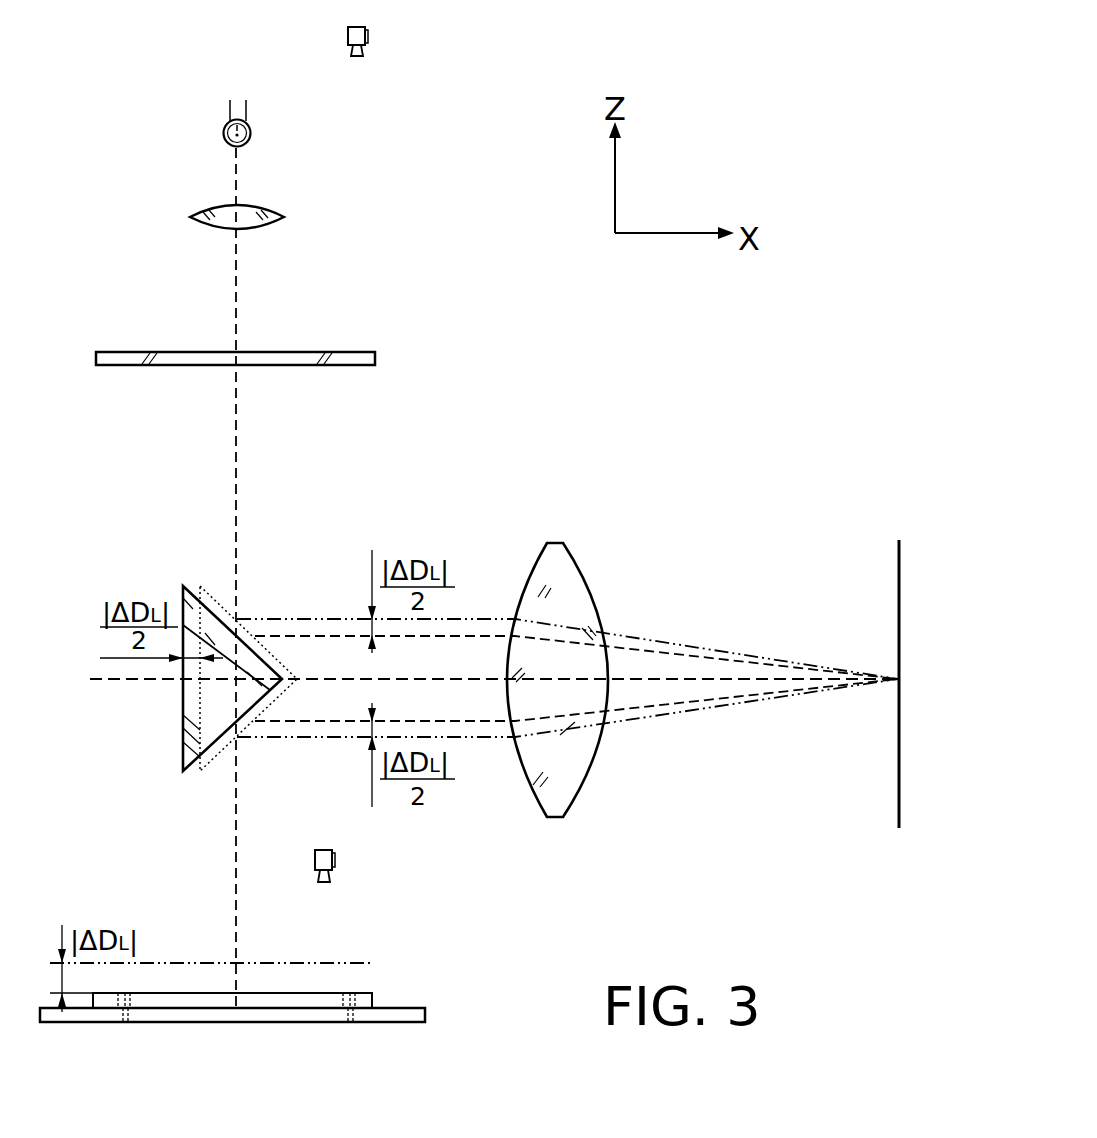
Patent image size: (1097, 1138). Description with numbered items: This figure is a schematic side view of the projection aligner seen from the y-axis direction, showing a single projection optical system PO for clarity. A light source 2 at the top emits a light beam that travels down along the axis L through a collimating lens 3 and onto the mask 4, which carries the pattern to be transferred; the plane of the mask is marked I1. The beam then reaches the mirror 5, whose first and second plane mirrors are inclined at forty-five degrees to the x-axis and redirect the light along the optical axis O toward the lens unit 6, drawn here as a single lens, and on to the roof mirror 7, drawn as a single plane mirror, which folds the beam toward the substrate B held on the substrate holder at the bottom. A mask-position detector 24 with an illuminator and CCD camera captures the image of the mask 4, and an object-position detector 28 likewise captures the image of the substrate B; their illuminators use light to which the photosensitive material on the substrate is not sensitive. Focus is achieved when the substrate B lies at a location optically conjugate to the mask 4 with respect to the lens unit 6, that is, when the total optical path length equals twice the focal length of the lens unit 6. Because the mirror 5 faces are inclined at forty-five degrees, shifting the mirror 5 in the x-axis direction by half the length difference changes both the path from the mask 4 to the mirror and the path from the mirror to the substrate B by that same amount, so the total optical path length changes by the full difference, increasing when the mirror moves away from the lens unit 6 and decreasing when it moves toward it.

The light source 2 is at (251, 132).
The collimating lens 3 is at (262, 206).
The mask 4 is at (280, 366).
The mirror 5 is at (183, 710).
The lens unit 6 is at (577, 590).
The roof mirror 7 is at (895, 570).
The mask-position detector 24 is at (368, 36).
The object-position detector 28 is at (336, 856).
The optical axis of illumination light L is at (235, 179).
The image plane I1 is at (236, 352).
The optical axis O is at (480, 674).
The projection optical system PO is at (600, 430).
The substrate B is at (373, 1003).